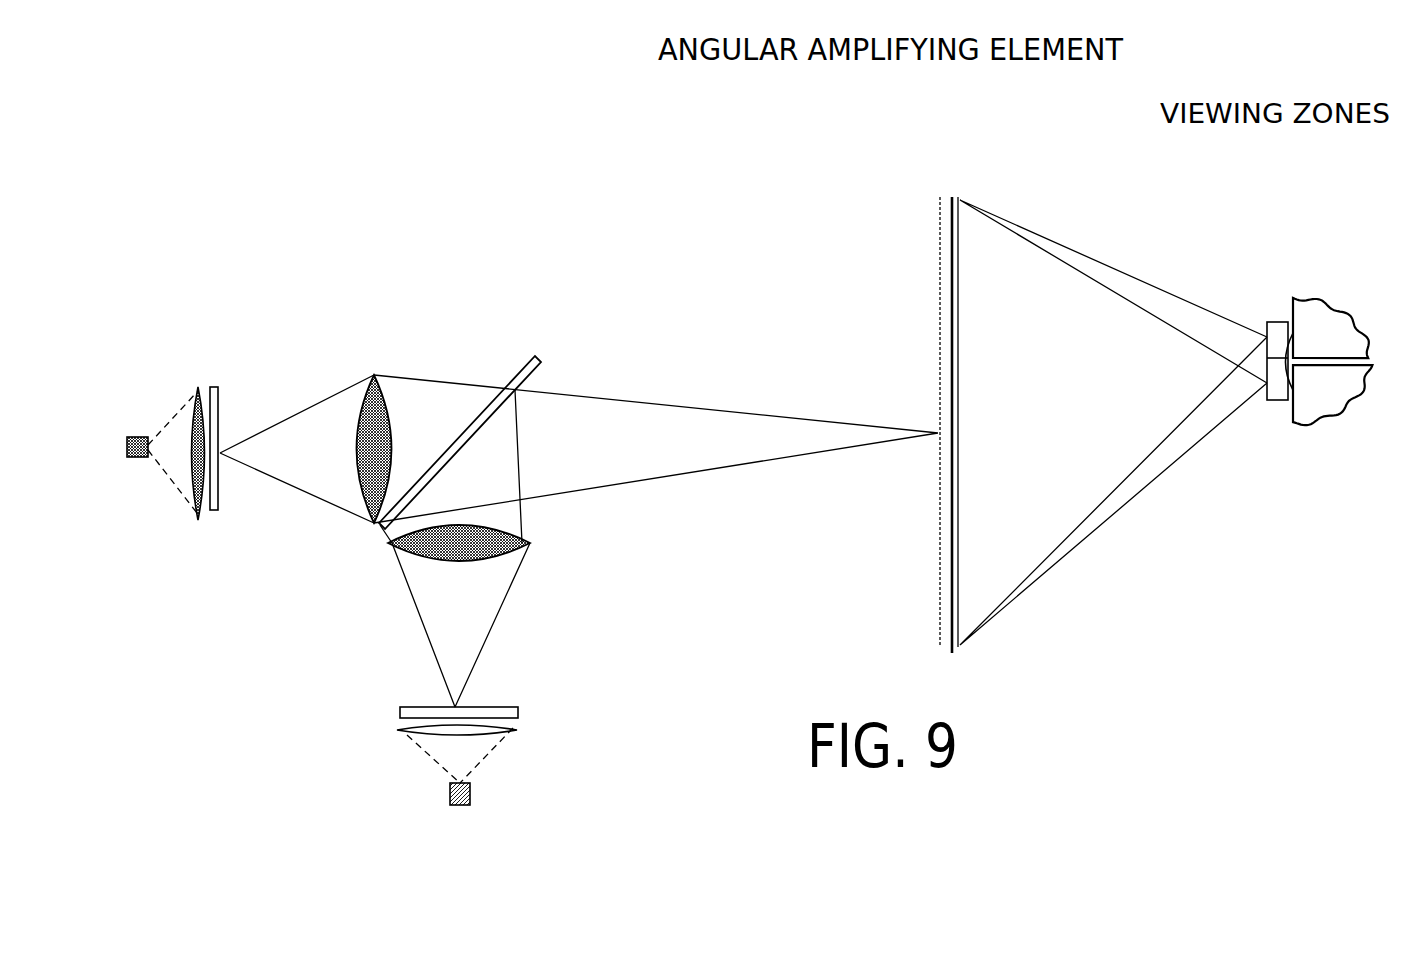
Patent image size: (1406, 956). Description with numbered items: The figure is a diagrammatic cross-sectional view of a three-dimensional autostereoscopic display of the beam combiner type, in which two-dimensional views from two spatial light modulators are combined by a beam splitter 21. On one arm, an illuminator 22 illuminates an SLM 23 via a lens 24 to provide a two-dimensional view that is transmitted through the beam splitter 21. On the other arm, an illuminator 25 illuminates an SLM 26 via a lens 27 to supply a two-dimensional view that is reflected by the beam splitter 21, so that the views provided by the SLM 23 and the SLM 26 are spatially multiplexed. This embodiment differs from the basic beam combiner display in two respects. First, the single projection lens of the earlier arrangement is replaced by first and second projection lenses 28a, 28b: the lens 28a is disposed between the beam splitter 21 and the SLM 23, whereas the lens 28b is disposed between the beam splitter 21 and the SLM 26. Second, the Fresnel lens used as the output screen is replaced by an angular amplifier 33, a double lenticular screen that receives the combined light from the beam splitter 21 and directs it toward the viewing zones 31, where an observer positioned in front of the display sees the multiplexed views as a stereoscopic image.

The beam splitter 21 is at (535, 355).
The illuminator 22 is at (133, 437).
The SLM 23 is at (220, 393).
The lens 24 is at (195, 390).
The illuminator 25 is at (470, 793).
The SLM 26 is at (518, 712).
The lens 27 is at (407, 737).
The first projection lens 28a is at (372, 370).
The second projection lens 28b is at (523, 543).
The viewing zones 31 is at (1278, 340).
The angular amplifier 33 is at (947, 197).